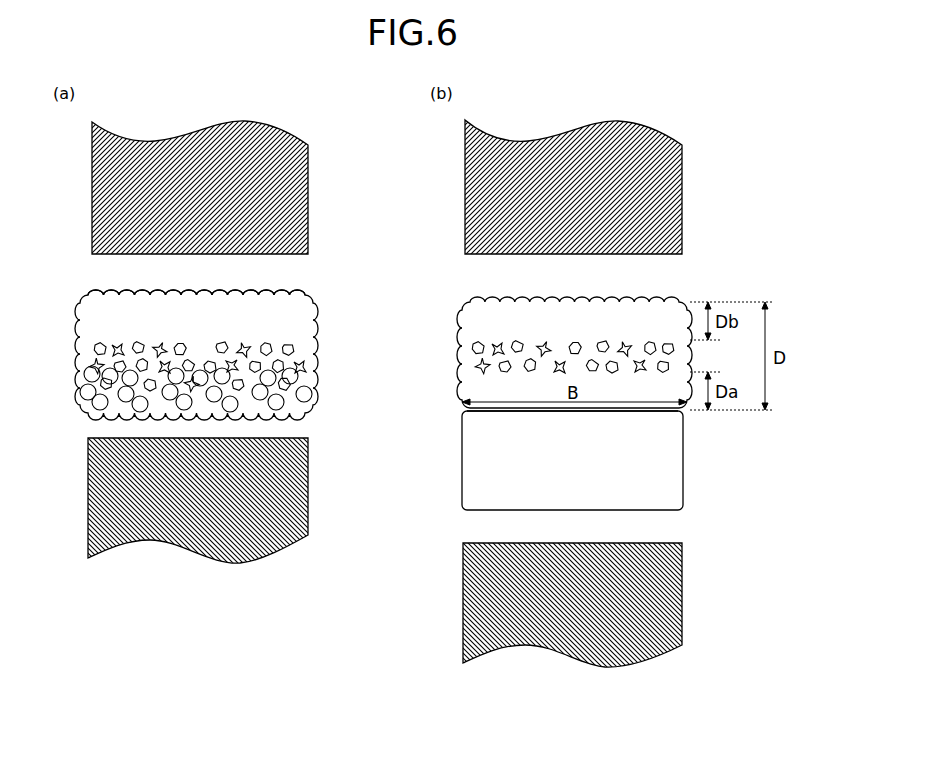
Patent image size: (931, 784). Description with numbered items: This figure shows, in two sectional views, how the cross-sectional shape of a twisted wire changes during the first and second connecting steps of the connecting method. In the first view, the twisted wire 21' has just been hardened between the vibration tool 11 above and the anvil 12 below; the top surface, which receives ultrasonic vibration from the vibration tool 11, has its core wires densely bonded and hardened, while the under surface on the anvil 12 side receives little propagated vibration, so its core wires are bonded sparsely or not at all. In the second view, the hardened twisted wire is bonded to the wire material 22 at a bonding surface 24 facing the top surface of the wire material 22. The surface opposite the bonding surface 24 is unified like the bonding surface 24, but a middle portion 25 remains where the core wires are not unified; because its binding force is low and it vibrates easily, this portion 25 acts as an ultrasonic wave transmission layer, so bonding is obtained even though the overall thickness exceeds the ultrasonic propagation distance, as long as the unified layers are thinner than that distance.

The vibration tool 11 is at (308, 169).
The anvil 12 is at (308, 495).
The twisted wire 21' is at (223, 341).
The wire material 22 is at (657, 476).
The bonding surface 24 is at (102, 293).
The part of twisted wire where core wires are not unified 25 is at (718, 340).